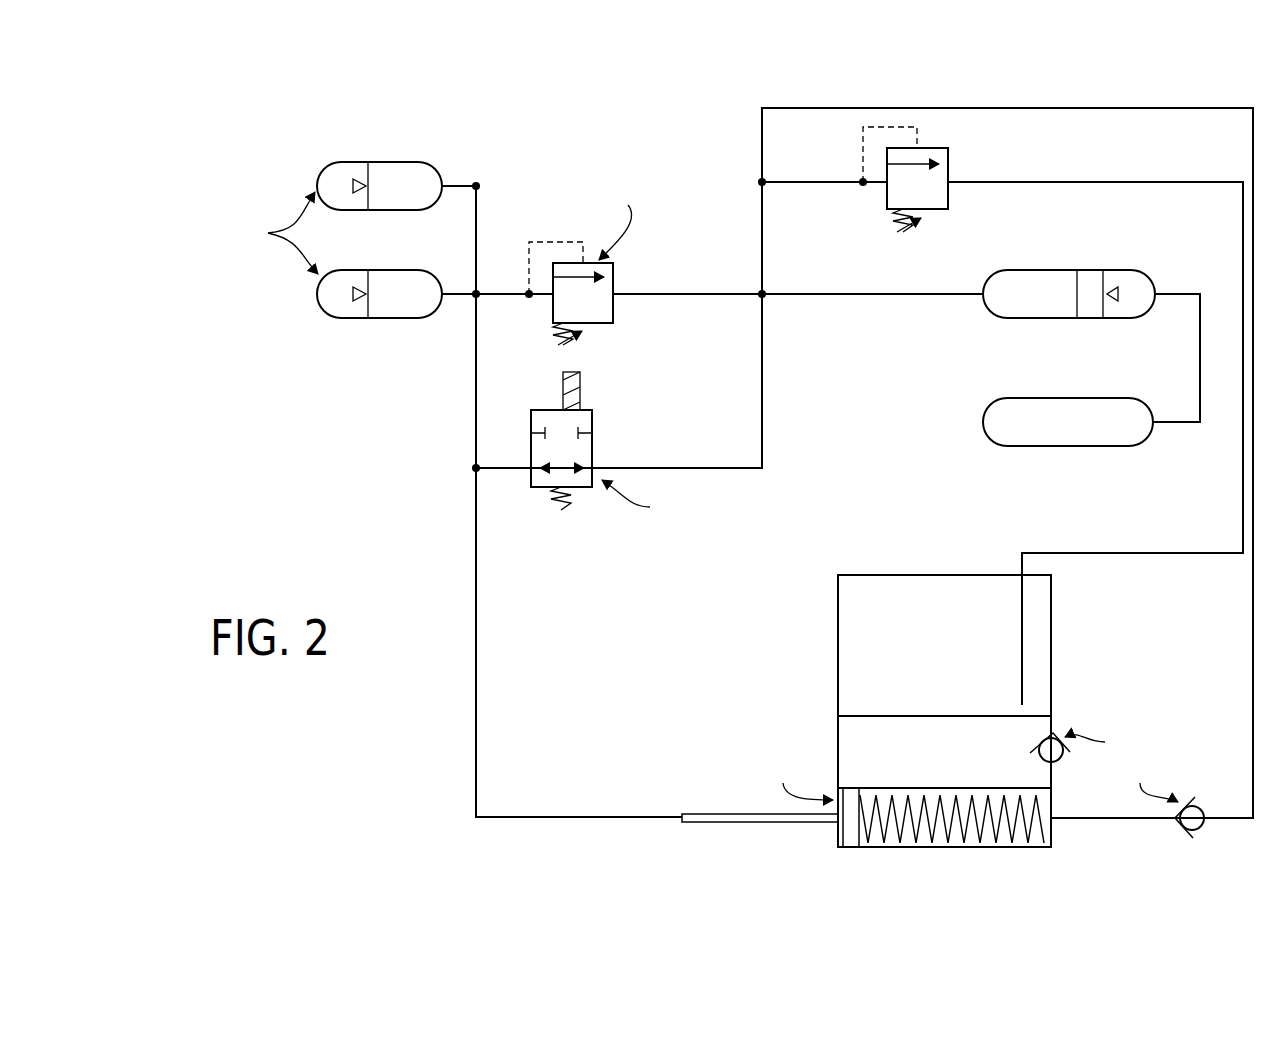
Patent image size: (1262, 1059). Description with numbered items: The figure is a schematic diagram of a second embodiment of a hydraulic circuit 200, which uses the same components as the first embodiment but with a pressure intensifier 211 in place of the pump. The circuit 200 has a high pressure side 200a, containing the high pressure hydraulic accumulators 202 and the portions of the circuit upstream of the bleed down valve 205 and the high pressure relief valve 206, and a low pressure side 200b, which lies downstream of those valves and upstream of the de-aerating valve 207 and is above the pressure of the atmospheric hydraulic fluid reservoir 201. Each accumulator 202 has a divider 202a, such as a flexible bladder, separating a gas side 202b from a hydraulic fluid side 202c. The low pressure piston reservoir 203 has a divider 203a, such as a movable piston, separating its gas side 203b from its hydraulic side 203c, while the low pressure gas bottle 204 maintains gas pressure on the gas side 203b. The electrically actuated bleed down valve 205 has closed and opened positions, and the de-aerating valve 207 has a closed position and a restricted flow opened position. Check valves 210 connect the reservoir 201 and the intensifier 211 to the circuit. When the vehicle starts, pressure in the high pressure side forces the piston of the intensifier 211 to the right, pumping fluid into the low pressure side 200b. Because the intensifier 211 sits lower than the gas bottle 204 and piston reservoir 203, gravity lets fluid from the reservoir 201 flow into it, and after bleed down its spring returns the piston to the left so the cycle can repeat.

The hydraulic circuit 200 is at (1182, 93).
The high pressure side 200a is at (360, 98).
The low pressure side 200b is at (687, 666).
The hydraulic fluid reservoir 201 is at (1051, 643).
The high pressure hydraulic accumulator 202 is at (340, 162).
The divider 202a is at (368, 162).
The gas side 202b is at (325, 178).
The hydraulic fluid side 202c is at (418, 205).
The low pressure piston reservoir 203 is at (1155, 280).
The divider 203a is at (1103, 318).
The gas side 203b is at (1150, 305).
The hydraulic side 203c is at (990, 305).
The low pressure gas bottle 204 is at (1035, 398).
The bleed down valve 205 is at (592, 421).
The high pressure relief valve 206 is at (613, 277).
The de-aerating valve 207 is at (948, 157).
The check valves 210 is at (1040, 752).
The pressure intensifier 211 is at (1051, 830).